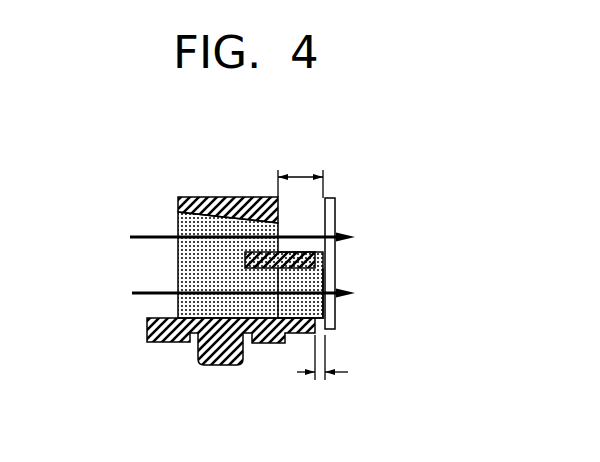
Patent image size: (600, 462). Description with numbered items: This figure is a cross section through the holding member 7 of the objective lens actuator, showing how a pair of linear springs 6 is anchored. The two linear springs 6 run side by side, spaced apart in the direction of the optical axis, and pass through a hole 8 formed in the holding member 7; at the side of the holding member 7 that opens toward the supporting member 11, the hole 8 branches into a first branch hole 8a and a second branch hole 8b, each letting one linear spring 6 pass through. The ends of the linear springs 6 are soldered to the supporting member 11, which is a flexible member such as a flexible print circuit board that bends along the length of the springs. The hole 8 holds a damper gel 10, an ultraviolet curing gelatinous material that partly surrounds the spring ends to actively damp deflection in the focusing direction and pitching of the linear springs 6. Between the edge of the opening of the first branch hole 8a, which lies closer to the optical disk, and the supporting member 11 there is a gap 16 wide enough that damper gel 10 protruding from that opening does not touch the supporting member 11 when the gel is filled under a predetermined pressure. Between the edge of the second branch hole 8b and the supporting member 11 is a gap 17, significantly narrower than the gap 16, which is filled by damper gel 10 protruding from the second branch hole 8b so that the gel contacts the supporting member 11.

The linear spring 6 is at (140, 237).
The holding member 7 is at (170, 343).
The hole 8 is at (204, 198).
The first branch hole 8a is at (259, 198).
The second branch hole 8b is at (300, 310).
The damper gel 10 is at (212, 273).
The supporting member 11 is at (336, 207).
The gap 16 is at (302, 175).
The gap 17 is at (320, 382).